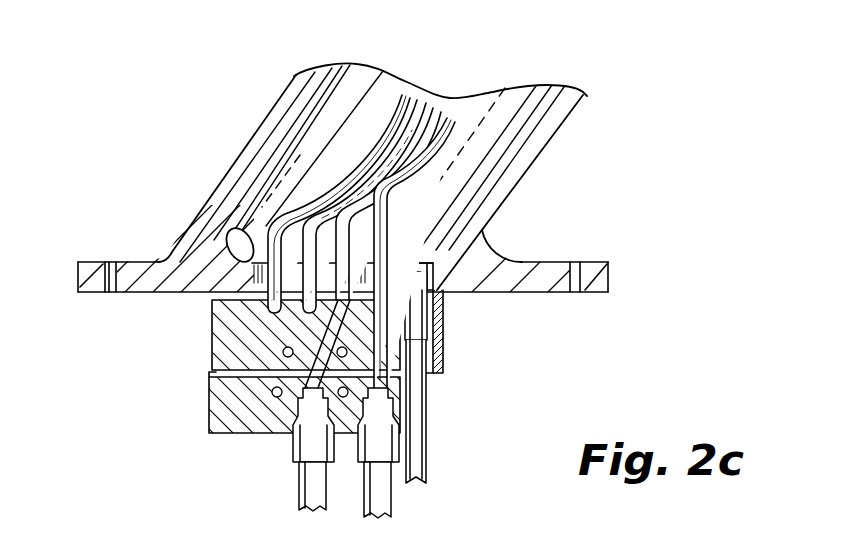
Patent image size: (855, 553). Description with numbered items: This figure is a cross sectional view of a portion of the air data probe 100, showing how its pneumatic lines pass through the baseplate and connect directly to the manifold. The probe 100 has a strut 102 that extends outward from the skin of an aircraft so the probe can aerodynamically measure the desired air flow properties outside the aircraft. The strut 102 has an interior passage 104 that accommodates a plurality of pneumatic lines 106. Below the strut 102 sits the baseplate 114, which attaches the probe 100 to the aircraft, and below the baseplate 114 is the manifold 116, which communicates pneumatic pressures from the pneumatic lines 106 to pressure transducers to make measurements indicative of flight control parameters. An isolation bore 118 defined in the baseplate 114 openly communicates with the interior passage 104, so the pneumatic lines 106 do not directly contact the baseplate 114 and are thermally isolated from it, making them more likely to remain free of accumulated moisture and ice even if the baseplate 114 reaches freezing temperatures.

The probe 100 is at (219, 100).
The strut 102 is at (586, 96).
The interior passage 104 is at (485, 108).
The pneumatic lines 106 is at (390, 127).
The baseplate 114 is at (614, 270).
The manifold 116 is at (209, 426).
The isolation bore 118 is at (228, 236).